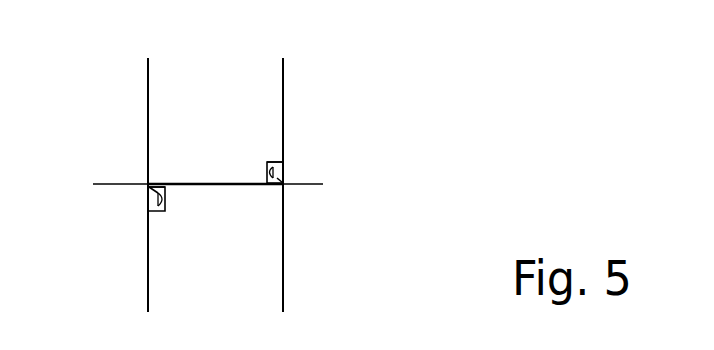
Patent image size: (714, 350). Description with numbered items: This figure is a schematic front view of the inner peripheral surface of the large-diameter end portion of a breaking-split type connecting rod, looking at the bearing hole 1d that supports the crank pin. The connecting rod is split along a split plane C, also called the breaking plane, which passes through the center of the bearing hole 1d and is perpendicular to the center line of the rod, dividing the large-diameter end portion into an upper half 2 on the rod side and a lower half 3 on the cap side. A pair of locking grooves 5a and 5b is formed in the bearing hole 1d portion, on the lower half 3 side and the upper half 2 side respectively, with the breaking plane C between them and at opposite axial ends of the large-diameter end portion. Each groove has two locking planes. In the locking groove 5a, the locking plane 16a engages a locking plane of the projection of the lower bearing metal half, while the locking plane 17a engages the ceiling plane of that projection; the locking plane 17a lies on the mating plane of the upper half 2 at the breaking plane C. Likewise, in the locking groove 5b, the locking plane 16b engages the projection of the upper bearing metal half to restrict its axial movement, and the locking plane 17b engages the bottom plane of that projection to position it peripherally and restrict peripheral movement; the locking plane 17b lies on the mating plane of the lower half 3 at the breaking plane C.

The crank pin supporting bearing hole 1d is at (221, 86).
The upper half 2 is at (168, 87).
The lower half 3 is at (272, 259).
The locking groove 5a is at (153, 211).
The locking groove 5b is at (277, 162).
The locking plane 16a is at (165, 207).
The locking plane 16b is at (267, 168).
The locking plane 17a is at (149, 187).
The locking plane 17b is at (277, 178).
The split plane C is at (222, 185).